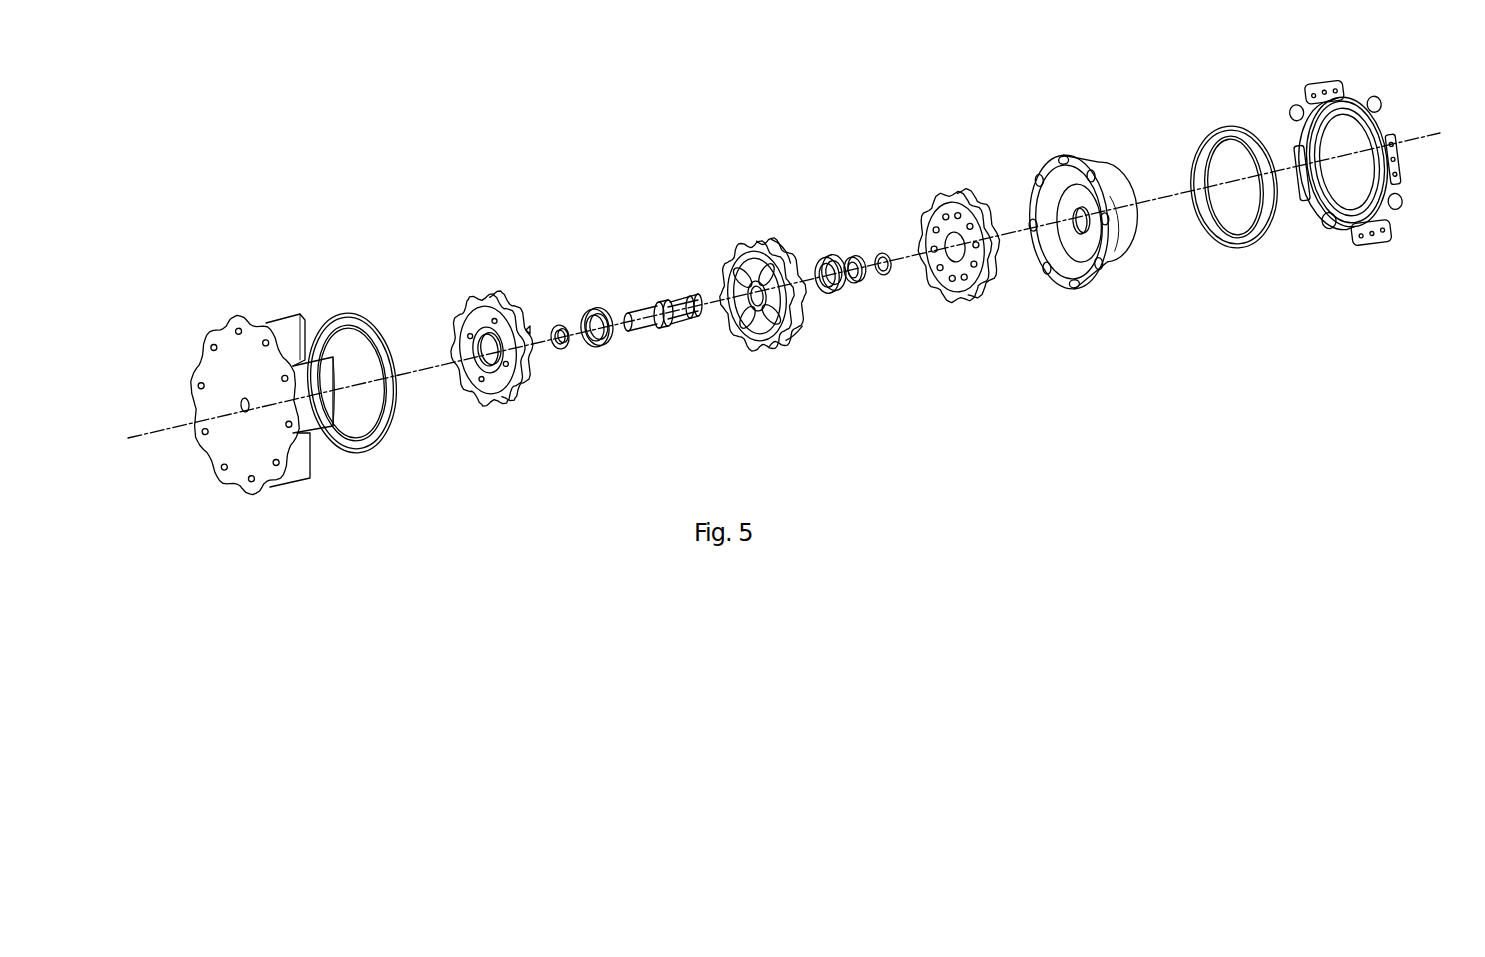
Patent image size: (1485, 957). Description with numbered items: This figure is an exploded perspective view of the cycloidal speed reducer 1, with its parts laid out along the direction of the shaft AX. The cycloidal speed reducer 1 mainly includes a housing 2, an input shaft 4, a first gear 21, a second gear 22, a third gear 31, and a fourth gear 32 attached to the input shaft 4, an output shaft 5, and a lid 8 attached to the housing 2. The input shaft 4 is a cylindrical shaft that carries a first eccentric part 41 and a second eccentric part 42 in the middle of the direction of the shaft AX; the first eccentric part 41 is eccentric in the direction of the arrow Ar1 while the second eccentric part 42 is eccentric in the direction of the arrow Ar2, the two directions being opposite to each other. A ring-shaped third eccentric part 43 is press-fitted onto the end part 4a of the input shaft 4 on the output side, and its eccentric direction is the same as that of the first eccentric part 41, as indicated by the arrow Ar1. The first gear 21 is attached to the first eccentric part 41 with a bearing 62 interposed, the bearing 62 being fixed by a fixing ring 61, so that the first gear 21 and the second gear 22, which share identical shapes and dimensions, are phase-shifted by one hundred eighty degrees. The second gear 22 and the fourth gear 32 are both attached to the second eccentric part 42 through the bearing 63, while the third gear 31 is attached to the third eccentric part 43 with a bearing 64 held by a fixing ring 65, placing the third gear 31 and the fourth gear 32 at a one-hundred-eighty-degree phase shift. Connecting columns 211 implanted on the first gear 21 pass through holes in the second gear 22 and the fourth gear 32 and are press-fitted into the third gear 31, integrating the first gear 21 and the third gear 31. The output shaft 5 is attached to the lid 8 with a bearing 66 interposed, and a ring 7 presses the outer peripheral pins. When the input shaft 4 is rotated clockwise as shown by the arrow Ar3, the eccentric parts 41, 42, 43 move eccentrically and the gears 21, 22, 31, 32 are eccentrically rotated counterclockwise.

The cycloidal speed reducer 1 is at (737, 130).
The housing 2 is at (256, 326).
The input shaft 4 is at (646, 237).
The end part 4a is at (702, 296).
The first eccentric part 41 is at (656, 300).
The second eccentric part 42 is at (685, 302).
The third eccentric part 43 is at (852, 257).
The output shaft 5 is at (1050, 165).
The ring 7 is at (361, 450).
The lid 8 is at (1372, 240).
The first gear 21 is at (510, 403).
The connecting columns 211 is at (527, 329).
The second gear 22 is at (757, 350).
The third gear 31 is at (955, 300).
The fourth gear 32 is at (793, 338).
The fixing ring 61 is at (562, 350).
The bearing 62 is at (601, 346).
The bearing 63 is at (818, 289).
The bearing 64 is at (854, 281).
The fixing ring 65 is at (885, 275).
The bearing 66 is at (1236, 250).
The shaft AX is at (150, 431).
The arrow Ar1 is at (652, 332).
The arrow Ar2 is at (686, 327).
The arrow Ar3 is at (663, 272).